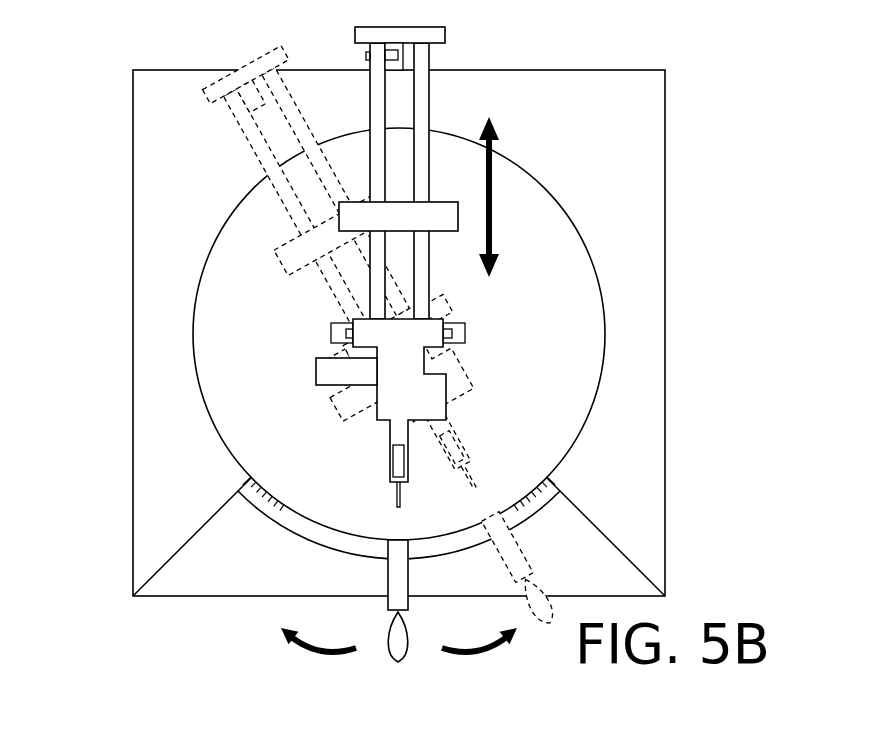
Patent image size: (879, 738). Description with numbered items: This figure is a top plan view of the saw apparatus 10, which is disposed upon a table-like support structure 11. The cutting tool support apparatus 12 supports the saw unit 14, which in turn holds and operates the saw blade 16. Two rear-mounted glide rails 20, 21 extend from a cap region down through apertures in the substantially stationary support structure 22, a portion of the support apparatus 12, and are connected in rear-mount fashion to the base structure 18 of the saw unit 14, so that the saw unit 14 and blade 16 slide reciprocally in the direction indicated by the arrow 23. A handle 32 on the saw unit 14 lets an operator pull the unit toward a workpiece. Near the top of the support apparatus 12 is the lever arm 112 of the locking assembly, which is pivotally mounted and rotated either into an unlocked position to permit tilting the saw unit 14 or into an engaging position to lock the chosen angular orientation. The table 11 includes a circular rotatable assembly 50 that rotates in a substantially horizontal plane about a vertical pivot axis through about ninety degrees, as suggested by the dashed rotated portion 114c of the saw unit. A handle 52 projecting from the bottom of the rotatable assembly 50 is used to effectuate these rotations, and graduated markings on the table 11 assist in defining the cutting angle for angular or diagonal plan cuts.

The saw apparatus 10 is at (96, 134).
The table-like support structure 11 is at (156, 466).
The cutting tool support apparatus 12 is at (423, 331).
The saw unit 14 is at (414, 397).
The saw blade 16 is at (398, 503).
The base structure 18 is at (465, 340).
The glide rail 20 is at (378, 83).
The glide rail 21 is at (422, 102).
The stationary support structure 22 is at (393, 229).
The arrow indicating direction of movability 23 is at (490, 185).
The handle 32 is at (397, 462).
The rotatable assembly 50 is at (220, 287).
The handle 52 is at (390, 605).
The lever arm 112 is at (395, 55).
The rotated portion 114c is at (470, 390).